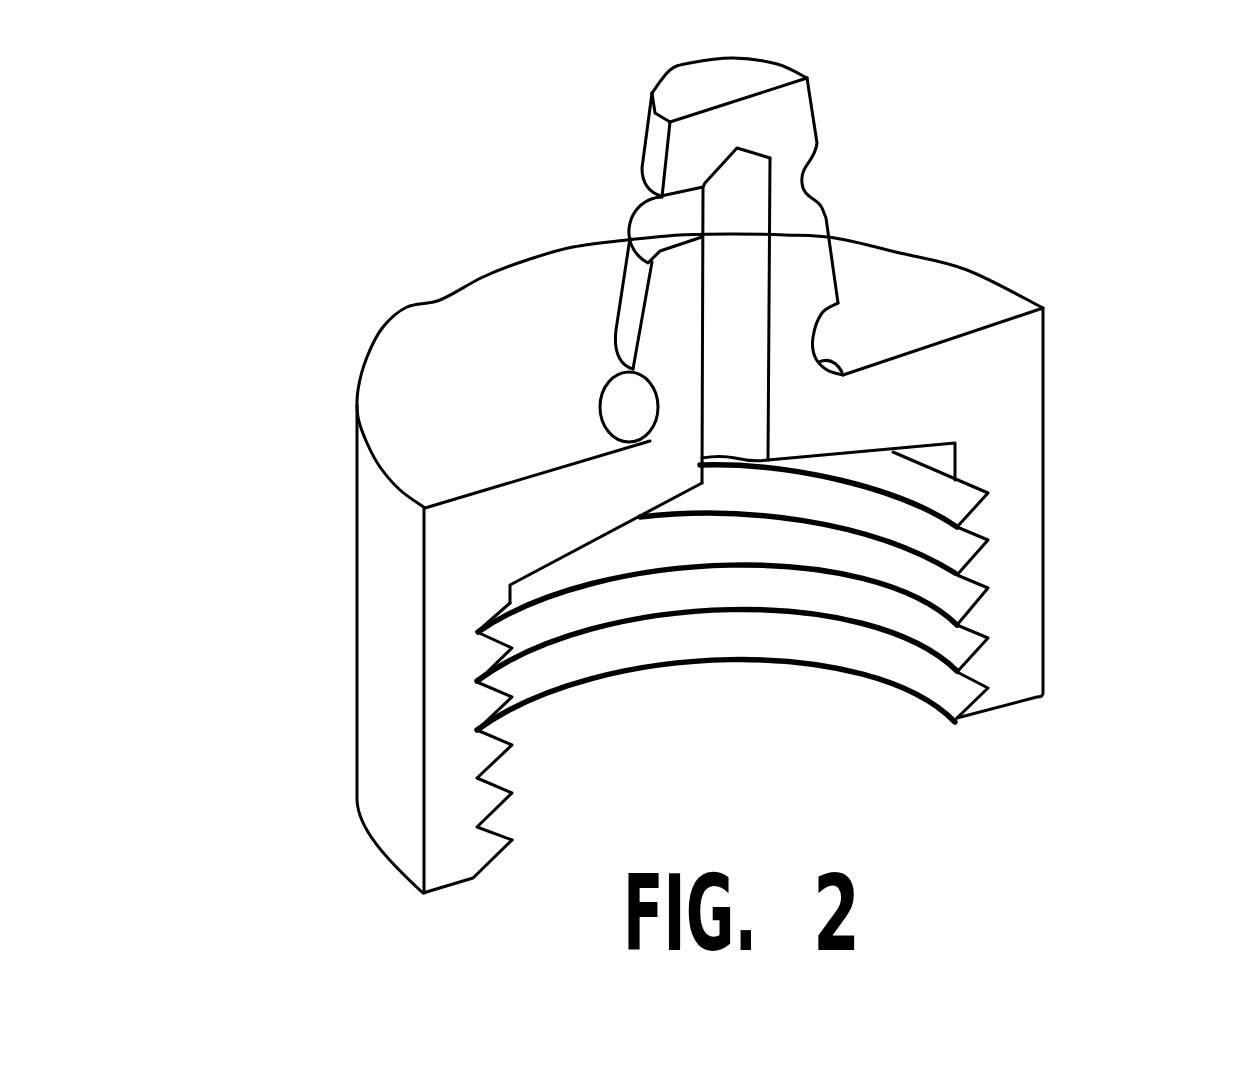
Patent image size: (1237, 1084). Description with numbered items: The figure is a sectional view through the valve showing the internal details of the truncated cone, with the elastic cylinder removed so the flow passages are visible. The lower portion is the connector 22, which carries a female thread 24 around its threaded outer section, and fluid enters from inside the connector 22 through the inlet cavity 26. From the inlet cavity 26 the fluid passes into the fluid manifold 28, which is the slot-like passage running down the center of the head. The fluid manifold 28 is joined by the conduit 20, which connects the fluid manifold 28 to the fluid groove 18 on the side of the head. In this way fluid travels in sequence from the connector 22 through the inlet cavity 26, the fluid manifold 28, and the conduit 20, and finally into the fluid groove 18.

The fluid groove 18 is at (805, 180).
The conduit 20 is at (668, 225).
The connector 22 is at (375, 667).
The female thread 24 is at (833, 635).
The inlet cavity 26 is at (762, 537).
The fluid manifold 28 is at (743, 273).